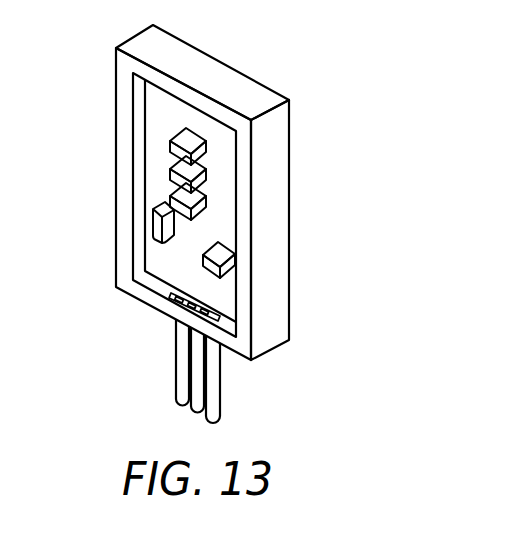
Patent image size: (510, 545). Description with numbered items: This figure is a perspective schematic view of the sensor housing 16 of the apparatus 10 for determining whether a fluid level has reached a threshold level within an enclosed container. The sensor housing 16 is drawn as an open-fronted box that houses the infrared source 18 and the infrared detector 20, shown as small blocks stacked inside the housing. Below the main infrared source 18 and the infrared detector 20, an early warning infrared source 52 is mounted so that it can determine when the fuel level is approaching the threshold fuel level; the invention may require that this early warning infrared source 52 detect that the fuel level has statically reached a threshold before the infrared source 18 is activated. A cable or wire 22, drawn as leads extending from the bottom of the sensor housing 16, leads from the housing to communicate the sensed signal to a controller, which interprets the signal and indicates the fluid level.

The apparatus 10 is at (229, 224).
The sensor housing 16 is at (290, 293).
The infrared source 18 is at (170, 146).
The infrared detector 20 is at (170, 173).
The early warning infrared source 52 is at (170, 198).
The cable or wire 22 is at (221, 387).